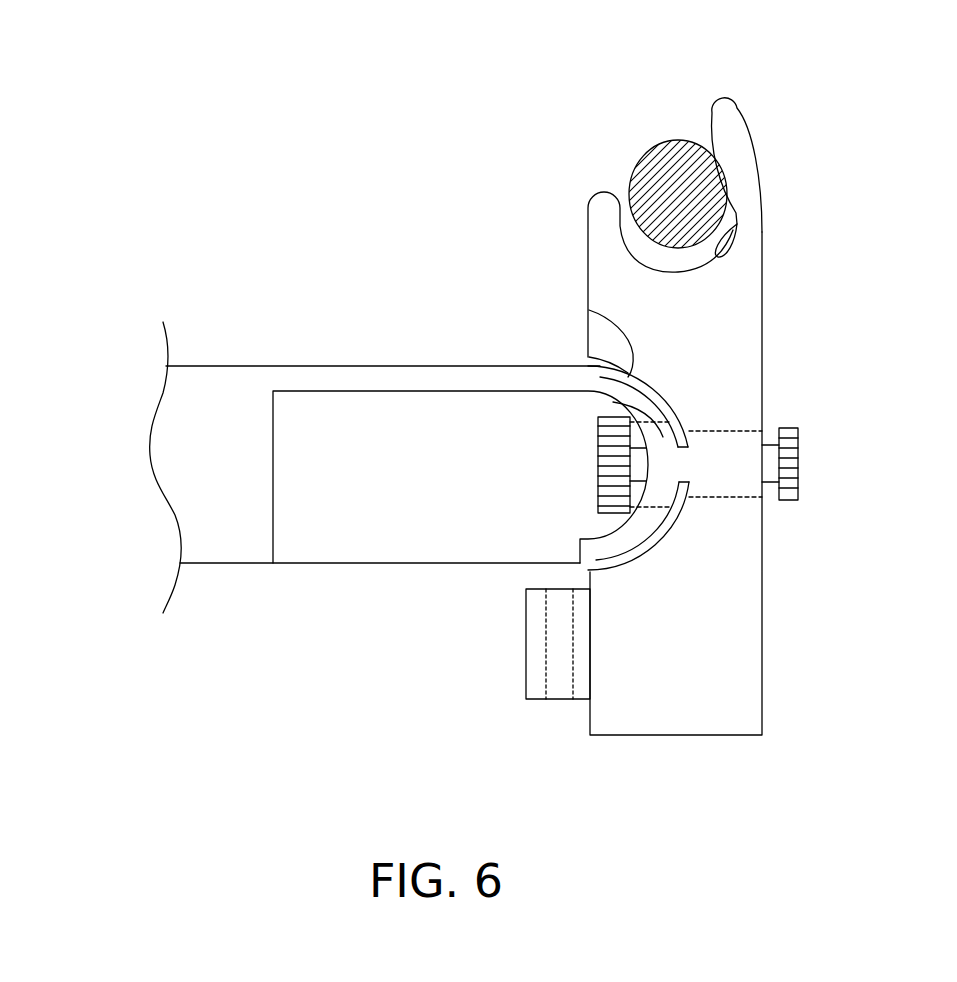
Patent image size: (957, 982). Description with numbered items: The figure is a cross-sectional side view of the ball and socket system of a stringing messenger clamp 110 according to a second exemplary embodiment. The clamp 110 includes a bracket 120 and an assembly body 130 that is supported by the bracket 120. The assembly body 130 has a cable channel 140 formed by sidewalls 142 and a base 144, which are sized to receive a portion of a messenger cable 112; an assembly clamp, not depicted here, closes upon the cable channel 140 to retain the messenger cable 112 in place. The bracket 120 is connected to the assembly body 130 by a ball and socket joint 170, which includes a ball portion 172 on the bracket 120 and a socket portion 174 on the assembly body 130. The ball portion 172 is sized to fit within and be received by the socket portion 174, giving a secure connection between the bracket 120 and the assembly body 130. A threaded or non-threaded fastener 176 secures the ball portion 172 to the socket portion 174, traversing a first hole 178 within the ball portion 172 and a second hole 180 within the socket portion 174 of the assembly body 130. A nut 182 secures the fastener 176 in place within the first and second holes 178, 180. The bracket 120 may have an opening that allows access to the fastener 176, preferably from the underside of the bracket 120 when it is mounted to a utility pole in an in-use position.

The stringing messenger clamp 110 is at (352, 60).
The messenger cable 112 is at (679, 158).
The bracket 120 is at (218, 528).
The assembly body 130 is at (743, 680).
The cable channel 140 is at (678, 225).
The sidewalls 142 is at (607, 222).
The base 144 is at (737, 228).
The ball and socket joint 170 is at (539, 425).
The ball portion 172 is at (589, 310).
The socket portion 174 is at (660, 390).
The fastener 176 is at (612, 483).
The first hole 178 is at (613, 402).
The second hole 180 is at (743, 475).
The nut 182 is at (790, 468).